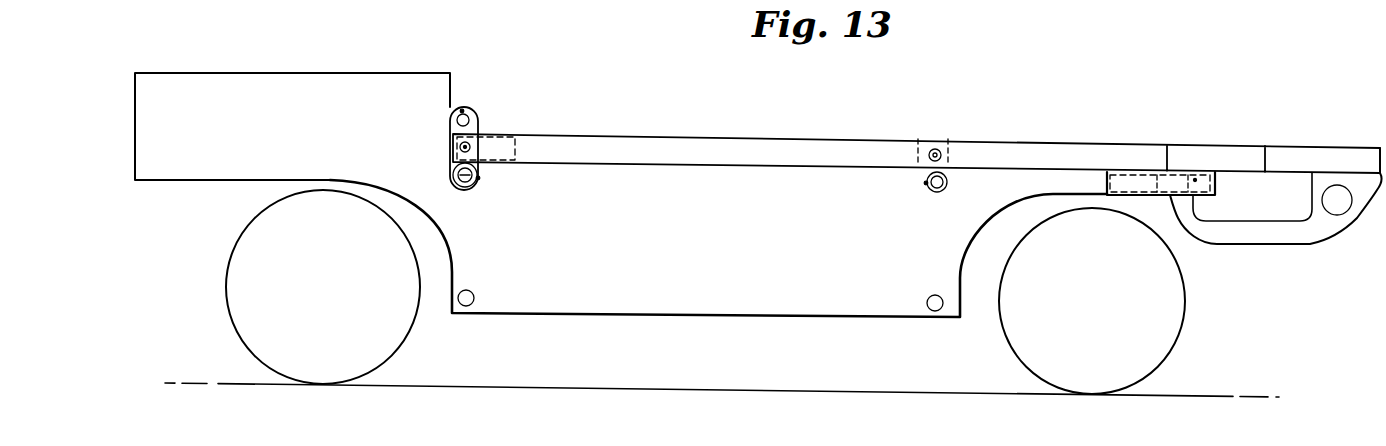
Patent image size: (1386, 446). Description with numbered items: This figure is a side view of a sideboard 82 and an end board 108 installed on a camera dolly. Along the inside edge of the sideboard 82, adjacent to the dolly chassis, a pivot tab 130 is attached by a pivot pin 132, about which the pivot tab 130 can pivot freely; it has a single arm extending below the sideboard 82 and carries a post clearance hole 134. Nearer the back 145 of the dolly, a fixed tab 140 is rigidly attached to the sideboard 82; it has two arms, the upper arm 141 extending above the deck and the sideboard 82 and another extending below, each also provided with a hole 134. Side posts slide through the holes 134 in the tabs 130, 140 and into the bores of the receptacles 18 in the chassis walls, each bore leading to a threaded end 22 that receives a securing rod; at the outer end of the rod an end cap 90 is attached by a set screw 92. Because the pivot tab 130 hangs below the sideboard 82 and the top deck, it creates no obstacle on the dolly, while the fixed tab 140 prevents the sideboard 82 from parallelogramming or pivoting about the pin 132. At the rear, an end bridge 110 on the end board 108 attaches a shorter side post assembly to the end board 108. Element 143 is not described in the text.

The receptacle 18 is at (467, 306).
The threaded end 22 is at (1093, 172).
The sideboard 82 is at (720, 150).
The end cap 90 is at (1205, 196).
The set screw 92 is at (1198, 177).
The end board 108 is at (1323, 160).
The end bridge 110 is at (1296, 227).
The pivot tab 130 is at (948, 157).
The pivot pin 132 is at (928, 150).
The post clearance hole 134 is at (462, 111).
The fixed tab 140 is at (470, 128).
The upper arm 141 is at (450, 118).
The roller 143 is at (452, 170).
The back 145 is at (252, 103).